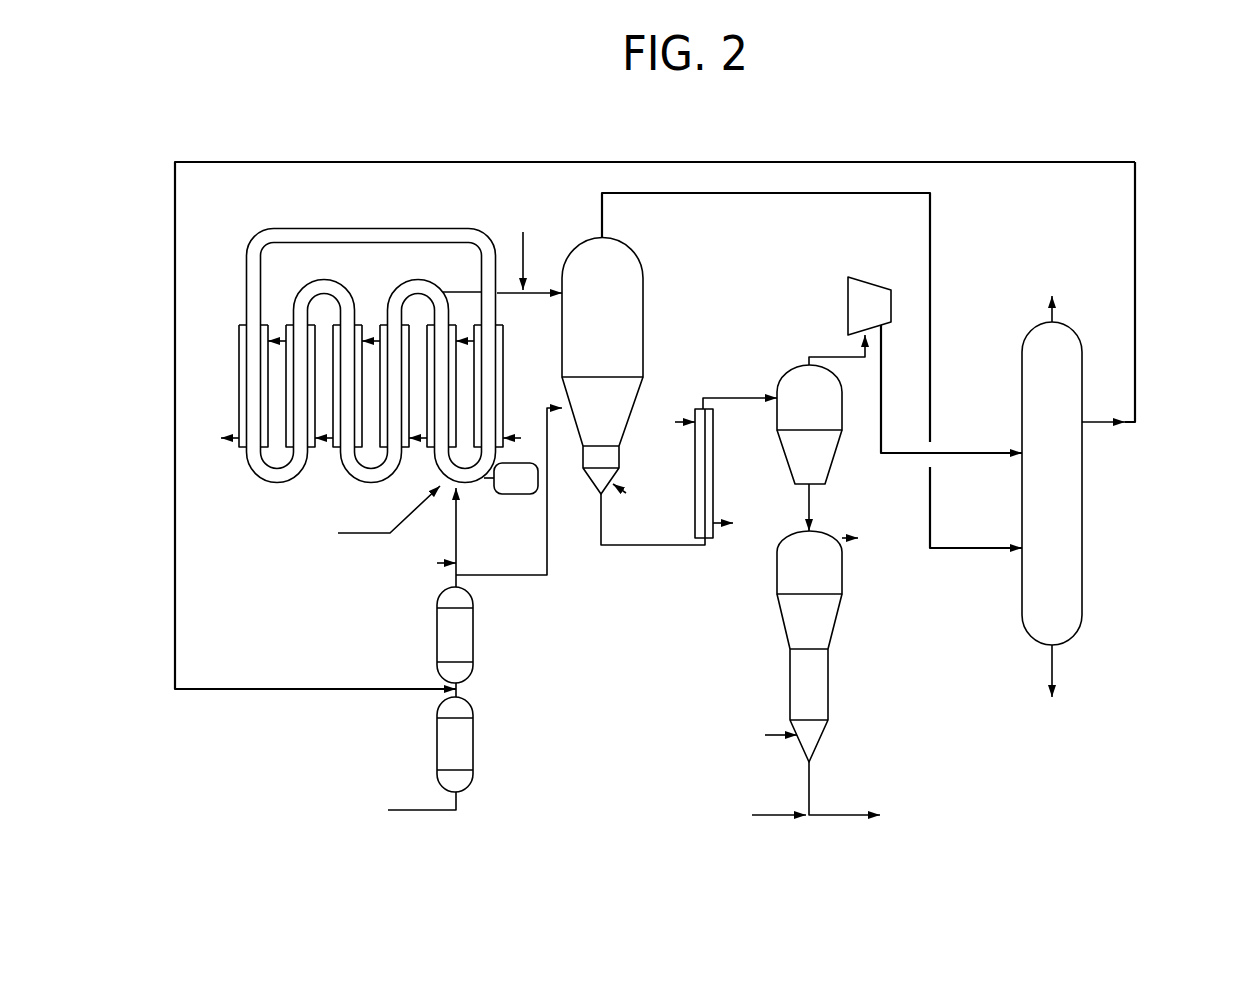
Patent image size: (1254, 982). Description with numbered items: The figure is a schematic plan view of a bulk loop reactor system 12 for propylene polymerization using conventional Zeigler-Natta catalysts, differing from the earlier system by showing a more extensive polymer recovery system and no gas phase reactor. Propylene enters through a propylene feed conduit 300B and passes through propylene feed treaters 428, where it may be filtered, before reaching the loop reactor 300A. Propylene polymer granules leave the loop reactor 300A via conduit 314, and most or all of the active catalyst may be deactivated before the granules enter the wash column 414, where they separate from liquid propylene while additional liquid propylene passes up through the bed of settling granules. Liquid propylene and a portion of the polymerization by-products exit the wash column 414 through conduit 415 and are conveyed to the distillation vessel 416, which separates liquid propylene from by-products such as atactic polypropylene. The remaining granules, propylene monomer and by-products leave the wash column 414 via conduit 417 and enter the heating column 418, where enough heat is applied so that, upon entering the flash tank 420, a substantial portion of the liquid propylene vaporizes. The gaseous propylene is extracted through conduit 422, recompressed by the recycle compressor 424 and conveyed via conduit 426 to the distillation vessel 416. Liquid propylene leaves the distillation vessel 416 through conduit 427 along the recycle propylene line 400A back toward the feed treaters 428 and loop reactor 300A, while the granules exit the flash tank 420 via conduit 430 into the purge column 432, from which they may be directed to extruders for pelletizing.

The bulk loop reactor system 12 is at (458, 148).
The recycle propylene line 400A is at (843, 160).
The loop reactor 300A is at (474, 229).
The propylene feed conduit 300B is at (456, 578).
The propylene feed treaters 428 is at (473, 632).
The conduit 314 is at (537, 290).
The wash column 414 is at (643, 348).
The conduit 415 is at (700, 194).
The conduit 417 is at (651, 548).
The heating column 418 is at (713, 475).
The flash tank 420 is at (835, 448).
The conduit 422 is at (827, 355).
The recycle compressor 424 is at (848, 298).
The conduit 426 is at (980, 453).
The conduit 430 is at (808, 500).
The purge column 432 is at (835, 632).
The distillation vessel 416 is at (1082, 477).
The conduit 427 is at (1137, 275).